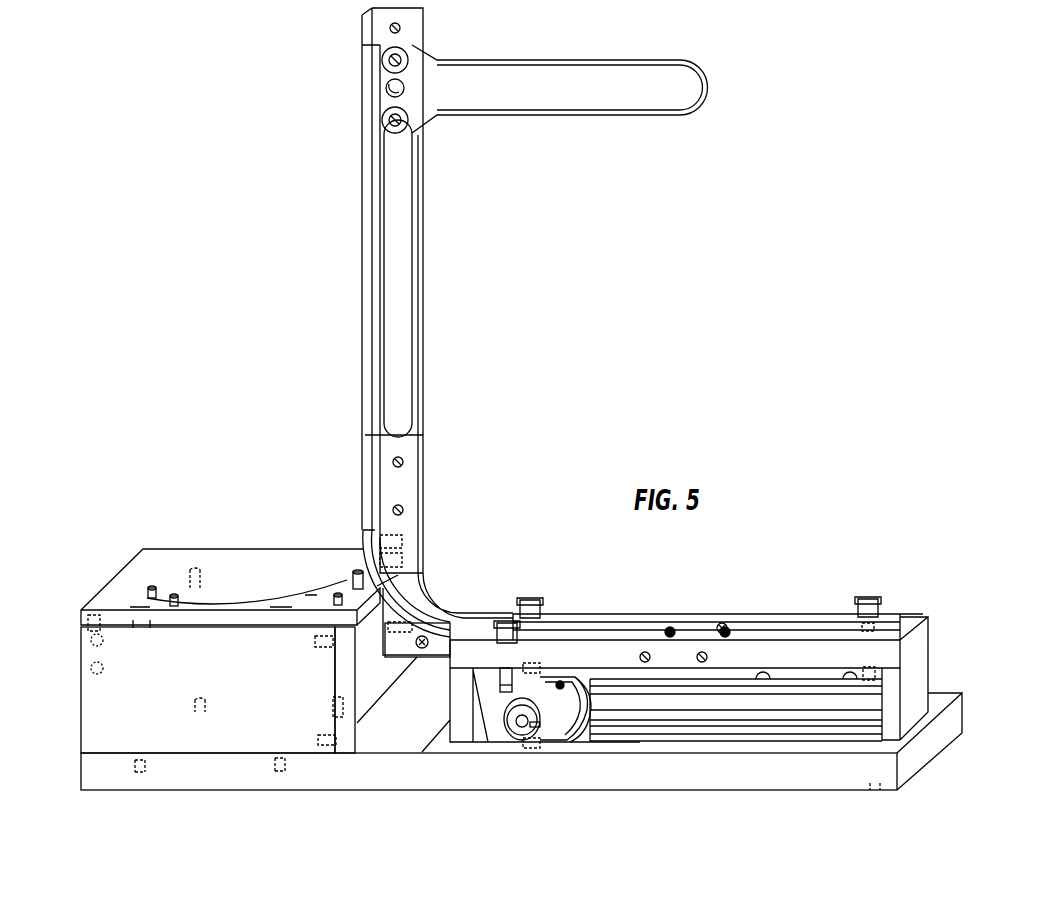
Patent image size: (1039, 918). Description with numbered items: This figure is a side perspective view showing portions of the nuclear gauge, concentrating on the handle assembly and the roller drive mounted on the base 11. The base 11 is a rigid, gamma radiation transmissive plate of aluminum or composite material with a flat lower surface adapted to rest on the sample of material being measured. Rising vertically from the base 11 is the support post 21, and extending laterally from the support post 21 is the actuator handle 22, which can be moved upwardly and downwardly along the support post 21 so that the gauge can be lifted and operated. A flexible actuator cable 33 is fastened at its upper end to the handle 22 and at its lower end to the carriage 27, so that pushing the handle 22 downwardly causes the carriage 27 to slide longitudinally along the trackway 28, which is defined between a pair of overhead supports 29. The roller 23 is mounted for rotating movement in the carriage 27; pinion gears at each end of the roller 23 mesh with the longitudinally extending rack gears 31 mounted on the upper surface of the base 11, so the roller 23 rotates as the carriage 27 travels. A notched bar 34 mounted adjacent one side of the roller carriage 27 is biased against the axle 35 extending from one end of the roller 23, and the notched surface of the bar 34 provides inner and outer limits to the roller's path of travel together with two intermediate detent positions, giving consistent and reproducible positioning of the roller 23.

The base 11 is at (633, 777).
The support post 21 is at (402, 245).
The actuator handle 22 is at (678, 100).
The roller 23 is at (583, 690).
The carriage 27 is at (552, 713).
The trackway 28 is at (693, 628).
The overhead supports 29 is at (768, 638).
The rack gears 31 is at (770, 735).
The flexible actuator cable 33 is at (405, 607).
The notched bar 34 is at (612, 677).
The axle 35 is at (521, 723).